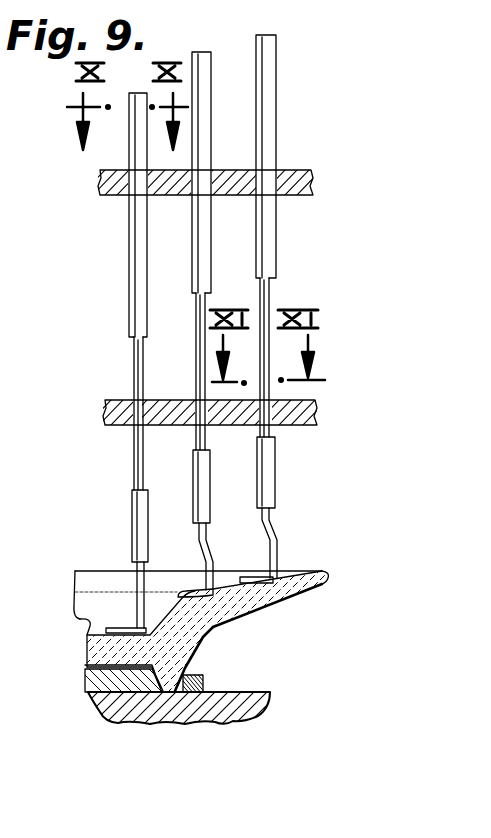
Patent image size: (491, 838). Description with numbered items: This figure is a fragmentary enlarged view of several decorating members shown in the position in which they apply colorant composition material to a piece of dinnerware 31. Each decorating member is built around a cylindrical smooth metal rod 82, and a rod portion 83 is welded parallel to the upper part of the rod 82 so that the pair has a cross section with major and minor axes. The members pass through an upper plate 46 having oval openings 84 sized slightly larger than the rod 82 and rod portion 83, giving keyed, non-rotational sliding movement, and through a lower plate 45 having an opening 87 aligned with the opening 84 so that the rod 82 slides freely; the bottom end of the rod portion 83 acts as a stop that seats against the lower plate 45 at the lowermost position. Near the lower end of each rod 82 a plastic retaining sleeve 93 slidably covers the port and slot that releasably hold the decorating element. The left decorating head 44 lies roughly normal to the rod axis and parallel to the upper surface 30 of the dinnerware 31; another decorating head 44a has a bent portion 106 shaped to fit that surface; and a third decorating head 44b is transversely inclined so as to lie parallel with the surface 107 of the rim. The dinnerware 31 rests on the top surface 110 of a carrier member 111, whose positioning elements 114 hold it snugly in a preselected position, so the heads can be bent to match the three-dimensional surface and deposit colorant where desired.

The upper surface 30 is at (86, 625).
The dinnerware 31 is at (75, 578).
The decorating element 44 is at (175, 621).
The decorating head 44a is at (215, 659).
The decorating head 44b is at (267, 606).
The plate 45 is at (112, 400).
The upper plate 46 is at (296, 170).
The rod 82 is at (261, 270).
The rod portion 83 is at (268, 124).
The openings 84 is at (190, 196).
The opening 87 is at (200, 398).
The retaining sleeve 93 is at (261, 470).
The bent portion 106 is at (183, 590).
The surface of the rim 107 is at (307, 576).
The top surface 110 is at (160, 716).
The carrier member 111 is at (100, 705).
The positioning elements 114 is at (205, 674).